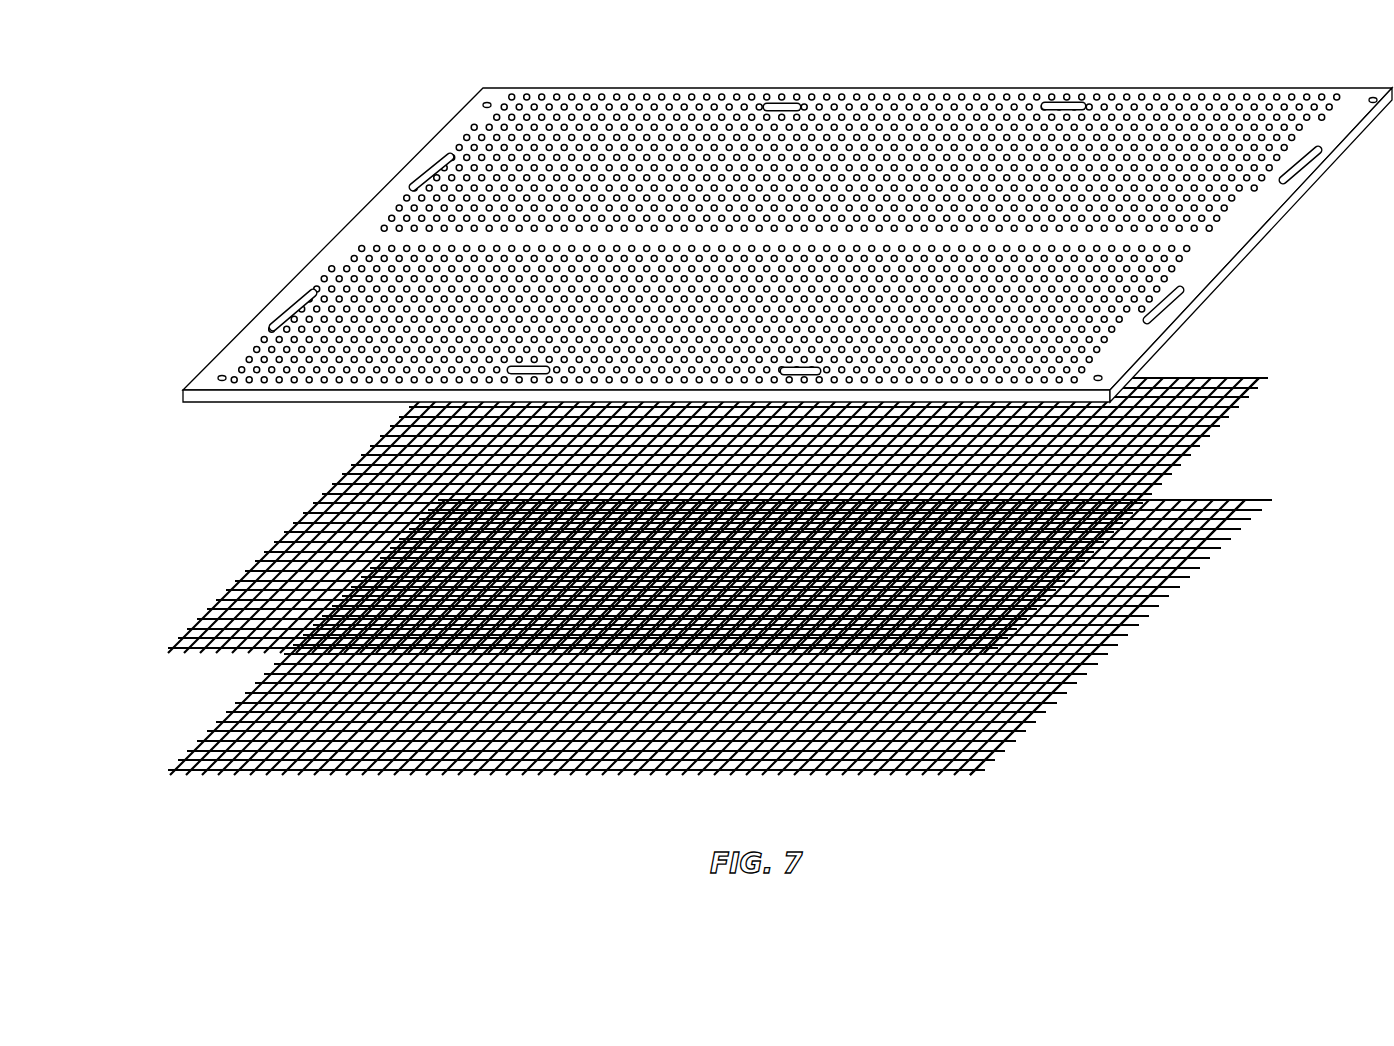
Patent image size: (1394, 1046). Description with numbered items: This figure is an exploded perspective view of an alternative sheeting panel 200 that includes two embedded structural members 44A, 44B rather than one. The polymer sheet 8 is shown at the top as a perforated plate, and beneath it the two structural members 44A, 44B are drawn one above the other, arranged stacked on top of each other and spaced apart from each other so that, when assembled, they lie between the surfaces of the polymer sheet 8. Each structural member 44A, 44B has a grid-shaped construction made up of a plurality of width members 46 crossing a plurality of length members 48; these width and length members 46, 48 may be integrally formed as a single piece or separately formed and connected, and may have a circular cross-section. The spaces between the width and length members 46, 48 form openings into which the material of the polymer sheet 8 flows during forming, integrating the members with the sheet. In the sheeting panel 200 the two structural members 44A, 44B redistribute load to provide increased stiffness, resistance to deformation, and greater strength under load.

The sheeting panel 200 is at (736, 456).
The polymer sheet 8 is at (1288, 252).
The structural member 44A is at (1239, 422).
The structural member 44B is at (1172, 652).
The width members 46 is at (1268, 378).
The length members 48 is at (1260, 385).